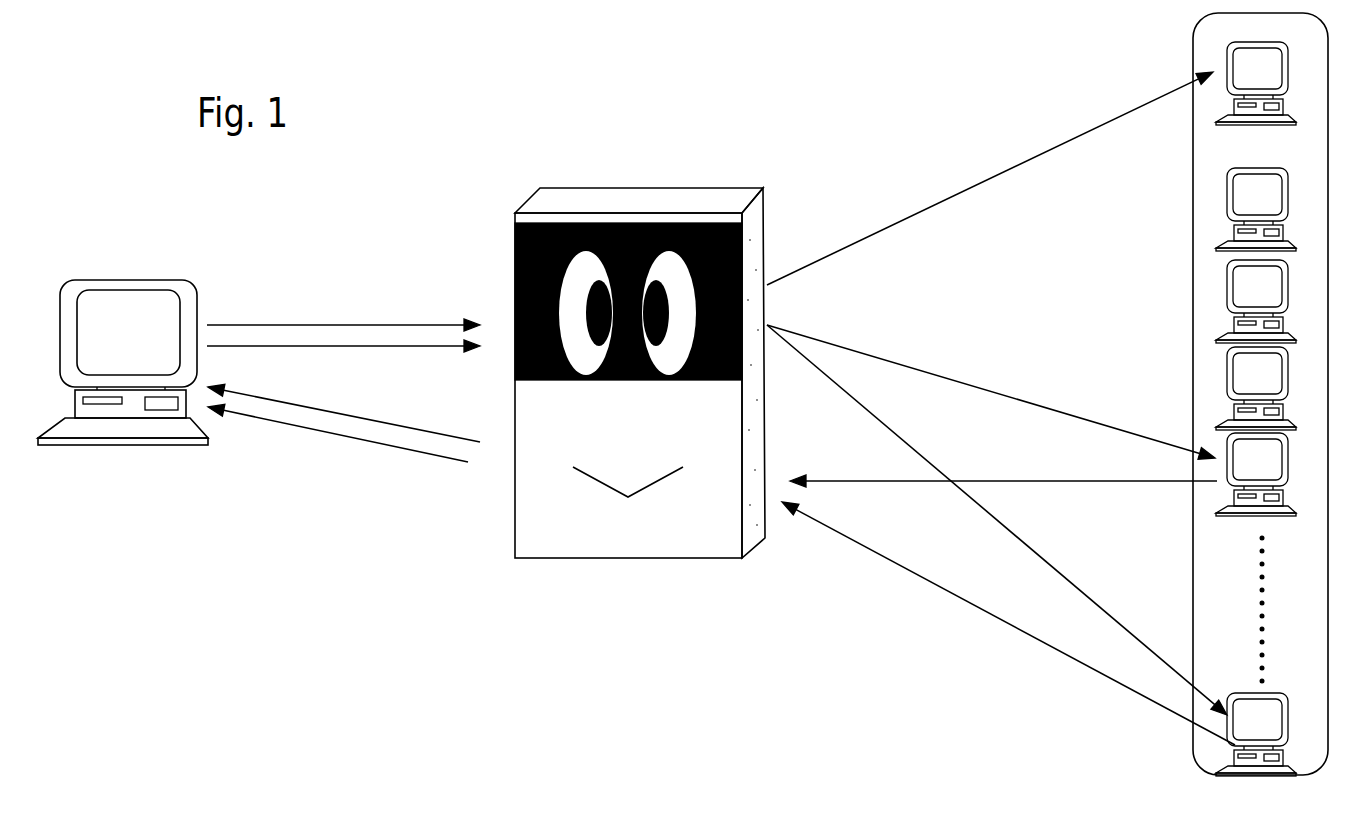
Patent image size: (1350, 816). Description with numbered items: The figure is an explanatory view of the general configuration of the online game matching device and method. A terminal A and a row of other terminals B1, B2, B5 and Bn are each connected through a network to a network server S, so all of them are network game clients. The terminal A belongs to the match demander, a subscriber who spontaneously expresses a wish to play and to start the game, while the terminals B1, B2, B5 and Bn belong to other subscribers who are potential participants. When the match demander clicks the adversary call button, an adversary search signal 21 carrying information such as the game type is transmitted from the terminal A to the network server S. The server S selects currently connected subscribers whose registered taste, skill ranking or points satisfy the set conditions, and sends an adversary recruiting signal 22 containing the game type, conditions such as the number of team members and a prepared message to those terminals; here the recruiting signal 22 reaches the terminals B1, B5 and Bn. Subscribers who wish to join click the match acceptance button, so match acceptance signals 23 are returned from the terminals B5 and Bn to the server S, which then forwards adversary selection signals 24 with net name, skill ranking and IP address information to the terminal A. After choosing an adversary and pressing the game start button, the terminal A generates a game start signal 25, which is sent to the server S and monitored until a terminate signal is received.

The terminal A is at (123, 362).
The network server S is at (648, 545).
The terminal B1 is at (1238, 53).
The terminal B2 is at (1238, 200).
The terminal B5 is at (1238, 467).
The terminal Bn is at (1217, 733).
The adversary search signal 21 is at (263, 325).
The adversary recruiting signal 22 is at (923, 247).
The match acceptance signal 23 is at (1018, 632).
The adversary selection signal 24 is at (363, 440).
The game start signal 25 is at (270, 352).